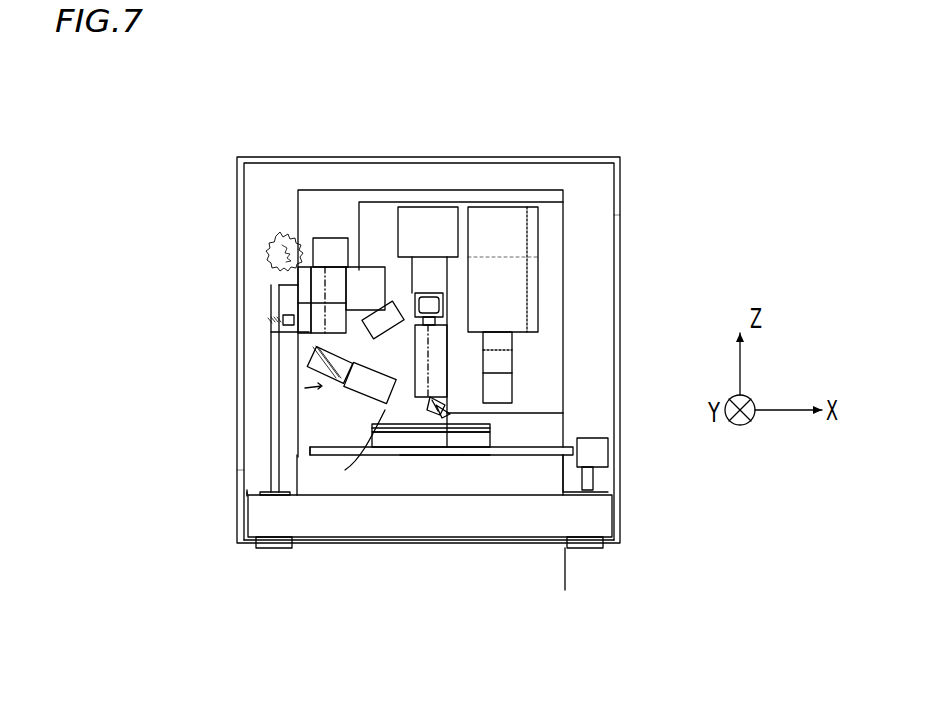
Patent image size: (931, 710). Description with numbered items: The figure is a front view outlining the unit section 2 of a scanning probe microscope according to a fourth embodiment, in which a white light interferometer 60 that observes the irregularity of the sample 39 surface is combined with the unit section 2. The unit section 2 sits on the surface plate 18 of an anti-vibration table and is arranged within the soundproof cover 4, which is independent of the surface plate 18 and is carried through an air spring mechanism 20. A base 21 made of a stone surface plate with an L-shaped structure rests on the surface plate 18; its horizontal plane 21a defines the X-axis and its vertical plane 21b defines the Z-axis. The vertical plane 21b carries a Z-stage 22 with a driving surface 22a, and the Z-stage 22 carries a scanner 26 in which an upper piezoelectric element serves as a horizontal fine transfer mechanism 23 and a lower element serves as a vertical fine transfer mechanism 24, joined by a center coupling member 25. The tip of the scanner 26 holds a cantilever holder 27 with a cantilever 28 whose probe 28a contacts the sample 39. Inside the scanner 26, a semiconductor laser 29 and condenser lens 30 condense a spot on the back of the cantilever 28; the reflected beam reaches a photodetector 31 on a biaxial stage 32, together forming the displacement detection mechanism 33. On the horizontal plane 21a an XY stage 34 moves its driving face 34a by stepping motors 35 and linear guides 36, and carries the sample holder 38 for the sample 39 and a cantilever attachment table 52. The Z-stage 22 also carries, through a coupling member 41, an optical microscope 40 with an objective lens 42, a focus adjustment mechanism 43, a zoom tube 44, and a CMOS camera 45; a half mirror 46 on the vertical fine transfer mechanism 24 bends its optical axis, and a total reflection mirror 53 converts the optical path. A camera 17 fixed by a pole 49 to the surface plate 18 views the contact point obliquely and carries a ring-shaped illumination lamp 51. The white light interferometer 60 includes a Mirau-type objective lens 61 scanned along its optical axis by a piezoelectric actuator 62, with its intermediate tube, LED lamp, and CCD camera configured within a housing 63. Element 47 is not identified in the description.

The scanning probe microscope unit section 2 is at (522, 177).
The soundproof cover 4 is at (620, 165).
The camera 17 is at (265, 228).
The surface plate 18 is at (613, 540).
The air spring mechanism 20 is at (257, 548).
The base 21 is at (563, 197).
The horizontal plane 21a is at (280, 460).
The vertical plane 21b is at (547, 218).
The Z-stage 22 is at (401, 296).
The driving surface 22a is at (548, 195).
The horizontal fine transfer mechanism 23 is at (452, 225).
The vertical fine transfer mechanism 24 is at (512, 362).
The center coupling member 25 is at (470, 318).
The scanner 26 is at (437, 267).
The cantilever holder 27 is at (470, 470).
The cantilever 28 is at (425, 460).
The probe 28a is at (415, 455).
The semiconductor laser 29 is at (447, 293).
The condenser lens 30 is at (443, 411).
The photodetector 31 is at (355, 250).
The biaxial stage 32 is at (366, 272).
The displacement detection mechanism 33 is at (375, 235).
The XY stage 34 is at (530, 470).
The driving face 34a is at (400, 455).
The stepping motor 35 is at (570, 475).
The linear guide 36 is at (247, 487).
The sample holder 38 is at (497, 470).
The sample 39 is at (347, 455).
The optical microscope 40 is at (300, 380).
The coupling member 41 is at (325, 243).
The objective lens 42 is at (300, 438).
The focus adjustment mechanism 43 is at (283, 320).
The zoom tube 44 is at (277, 237).
The CMOS camera 45 is at (300, 245).
The half mirror 46 is at (497, 413).
The motor unit 47 is at (300, 305).
The pole 49 is at (285, 412).
The illumination lamp 51 is at (275, 252).
The cantilever attachment table 52 is at (593, 455).
The total reflection mirror 53 is at (283, 320).
The white light interferometer 60 is at (540, 276).
The objective lens 61 is at (500, 390).
The piezoelectric actuator 62 is at (440, 350).
The housing 63 is at (532, 247).